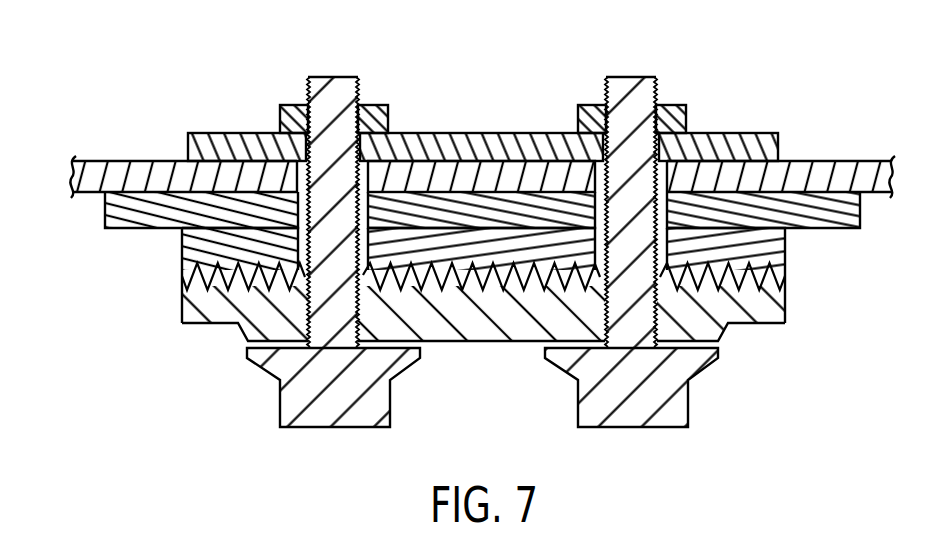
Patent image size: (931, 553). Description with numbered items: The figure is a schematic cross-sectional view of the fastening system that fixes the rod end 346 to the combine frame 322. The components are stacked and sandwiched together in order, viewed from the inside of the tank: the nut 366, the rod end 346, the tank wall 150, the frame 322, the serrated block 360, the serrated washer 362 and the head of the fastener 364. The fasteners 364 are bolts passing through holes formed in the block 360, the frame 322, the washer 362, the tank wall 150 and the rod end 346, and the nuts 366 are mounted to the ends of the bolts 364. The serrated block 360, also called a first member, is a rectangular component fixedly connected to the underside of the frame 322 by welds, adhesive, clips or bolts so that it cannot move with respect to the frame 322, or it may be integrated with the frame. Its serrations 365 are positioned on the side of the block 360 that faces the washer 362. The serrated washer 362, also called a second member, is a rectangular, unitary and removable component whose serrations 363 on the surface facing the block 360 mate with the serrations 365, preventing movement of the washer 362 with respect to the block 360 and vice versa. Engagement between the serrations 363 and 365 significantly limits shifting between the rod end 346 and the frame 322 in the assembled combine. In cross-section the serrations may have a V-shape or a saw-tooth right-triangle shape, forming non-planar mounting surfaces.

The tank wall 150 is at (160, 160).
The rod end 346 is at (243, 134).
The nut 366 is at (372, 127).
The frame 322 is at (105, 206).
The serrated block 360 is at (182, 240).
The serrations 365 is at (182, 268).
The serrations 363 is at (451, 331).
The serrated washer 362 is at (225, 318).
The fastener 364 is at (322, 412).